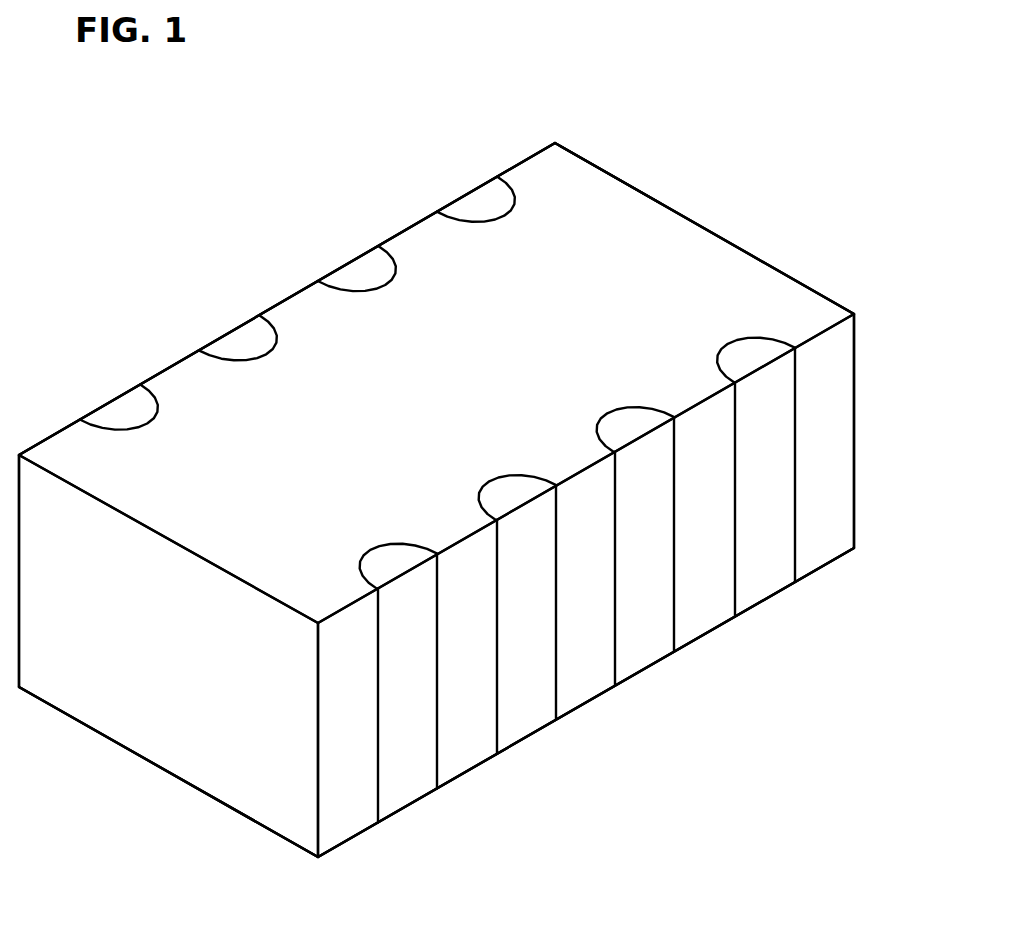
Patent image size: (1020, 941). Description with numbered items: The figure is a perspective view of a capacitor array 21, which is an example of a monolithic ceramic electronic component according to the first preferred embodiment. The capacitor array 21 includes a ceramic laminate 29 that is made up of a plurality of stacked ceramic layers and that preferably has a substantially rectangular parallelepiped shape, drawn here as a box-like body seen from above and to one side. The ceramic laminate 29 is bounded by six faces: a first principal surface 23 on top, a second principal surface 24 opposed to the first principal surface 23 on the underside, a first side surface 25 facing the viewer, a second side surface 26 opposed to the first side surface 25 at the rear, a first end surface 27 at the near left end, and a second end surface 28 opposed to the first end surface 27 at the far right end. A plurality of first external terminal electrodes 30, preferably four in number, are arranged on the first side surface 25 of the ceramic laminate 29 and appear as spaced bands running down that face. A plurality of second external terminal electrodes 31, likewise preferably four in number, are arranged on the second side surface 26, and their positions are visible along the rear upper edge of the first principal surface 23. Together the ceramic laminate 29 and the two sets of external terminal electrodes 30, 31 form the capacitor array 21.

The capacitor array 21 is at (73, 152).
The first principal surface 23 is at (677, 233).
The second principal surface 24 is at (200, 762).
The first side surface 25 is at (598, 660).
The second side surface 26 is at (177, 387).
The first end surface 27 is at (115, 727).
The second end surface 28 is at (757, 283).
The ceramic laminate 29 is at (608, 168).
The first external terminal electrodes 30 is at (408, 785).
The second external terminal electrodes 31 is at (357, 267).